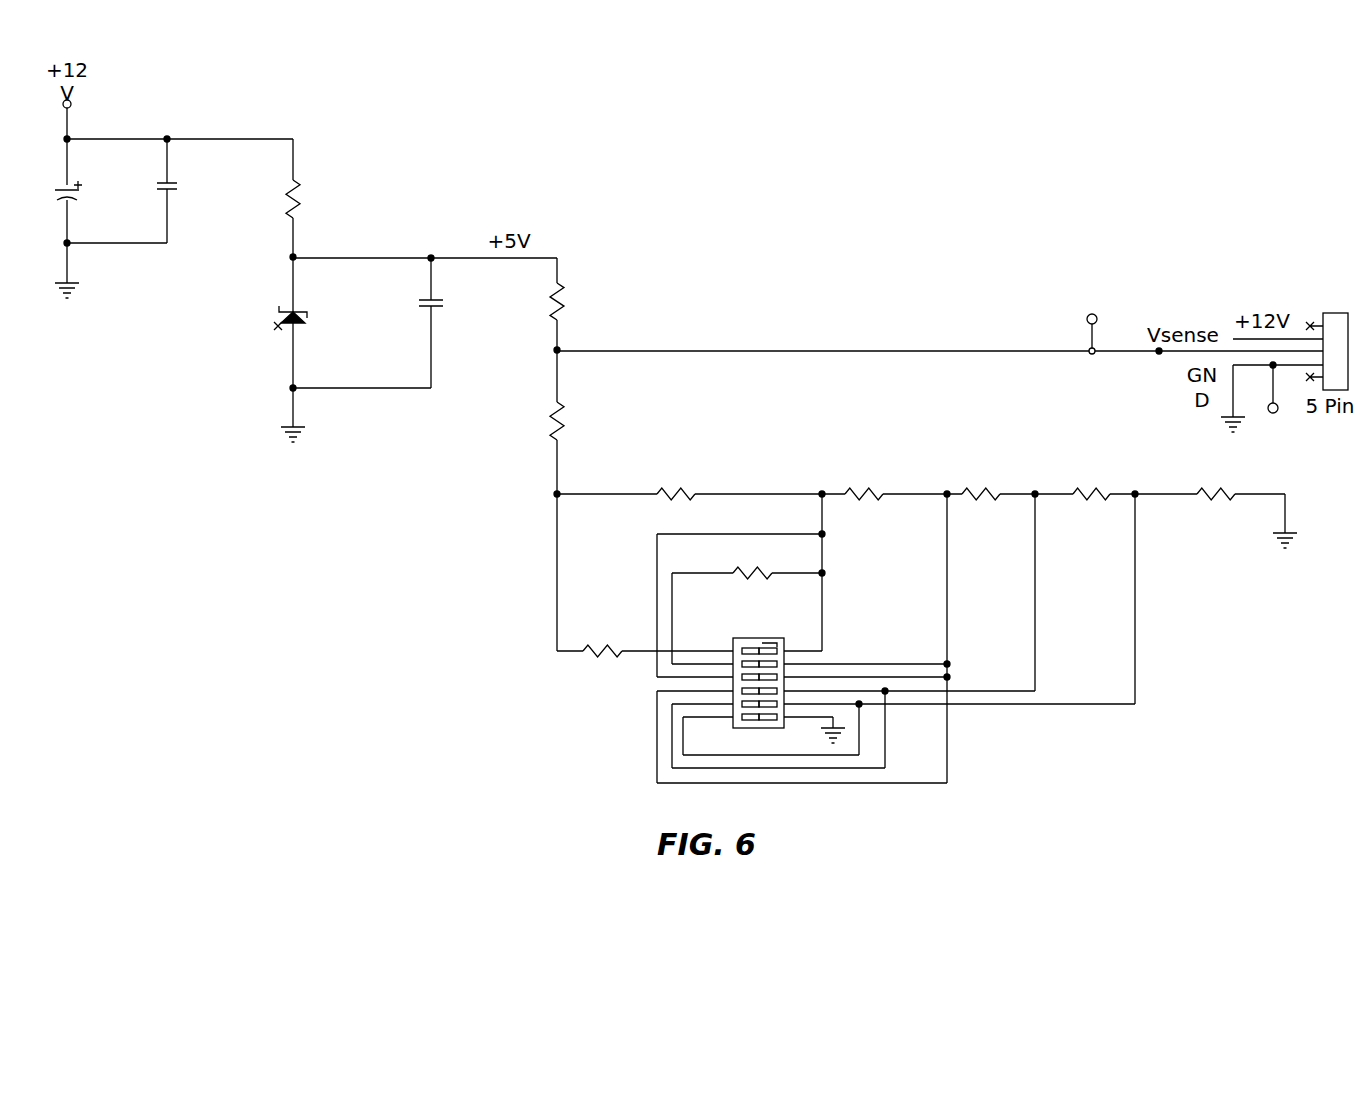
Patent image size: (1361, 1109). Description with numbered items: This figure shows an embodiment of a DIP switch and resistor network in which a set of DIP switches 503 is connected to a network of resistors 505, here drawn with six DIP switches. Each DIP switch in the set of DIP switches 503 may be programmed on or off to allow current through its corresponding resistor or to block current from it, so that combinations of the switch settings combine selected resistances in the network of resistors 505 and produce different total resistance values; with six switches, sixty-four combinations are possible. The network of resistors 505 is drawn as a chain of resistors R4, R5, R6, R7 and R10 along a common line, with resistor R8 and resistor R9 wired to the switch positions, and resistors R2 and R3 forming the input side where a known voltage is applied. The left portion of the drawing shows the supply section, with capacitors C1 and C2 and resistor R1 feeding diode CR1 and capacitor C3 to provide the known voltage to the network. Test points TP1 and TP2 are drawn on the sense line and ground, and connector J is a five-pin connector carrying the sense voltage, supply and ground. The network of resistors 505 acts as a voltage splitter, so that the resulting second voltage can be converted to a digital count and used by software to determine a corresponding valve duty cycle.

The network of resistors 505 is at (927, 508).
The set of DIP switches 503 is at (773, 725).
The resistor R1 is at (312, 198).
The resistor R2 is at (577, 301).
The resistor R3 is at (577, 421).
The resistor R4 is at (676, 479).
The resistor R5 is at (864, 479).
The resistor R6 is at (981, 479).
The resistor R7 is at (1091, 479).
The resistor R8 is at (602, 636).
The resistor R9 is at (752, 559).
The resistor R10 is at (1215, 479).
The capacitor C1 is at (85, 191).
The capacitor C2 is at (189, 183).
The capacitor C3 is at (451, 300).
The zener diode CR1 is at (316, 317).
The test point TP1 is at (1091, 318).
The test point TP2 is at (1276, 401).
The 5 pin connector J is at (1327, 337).